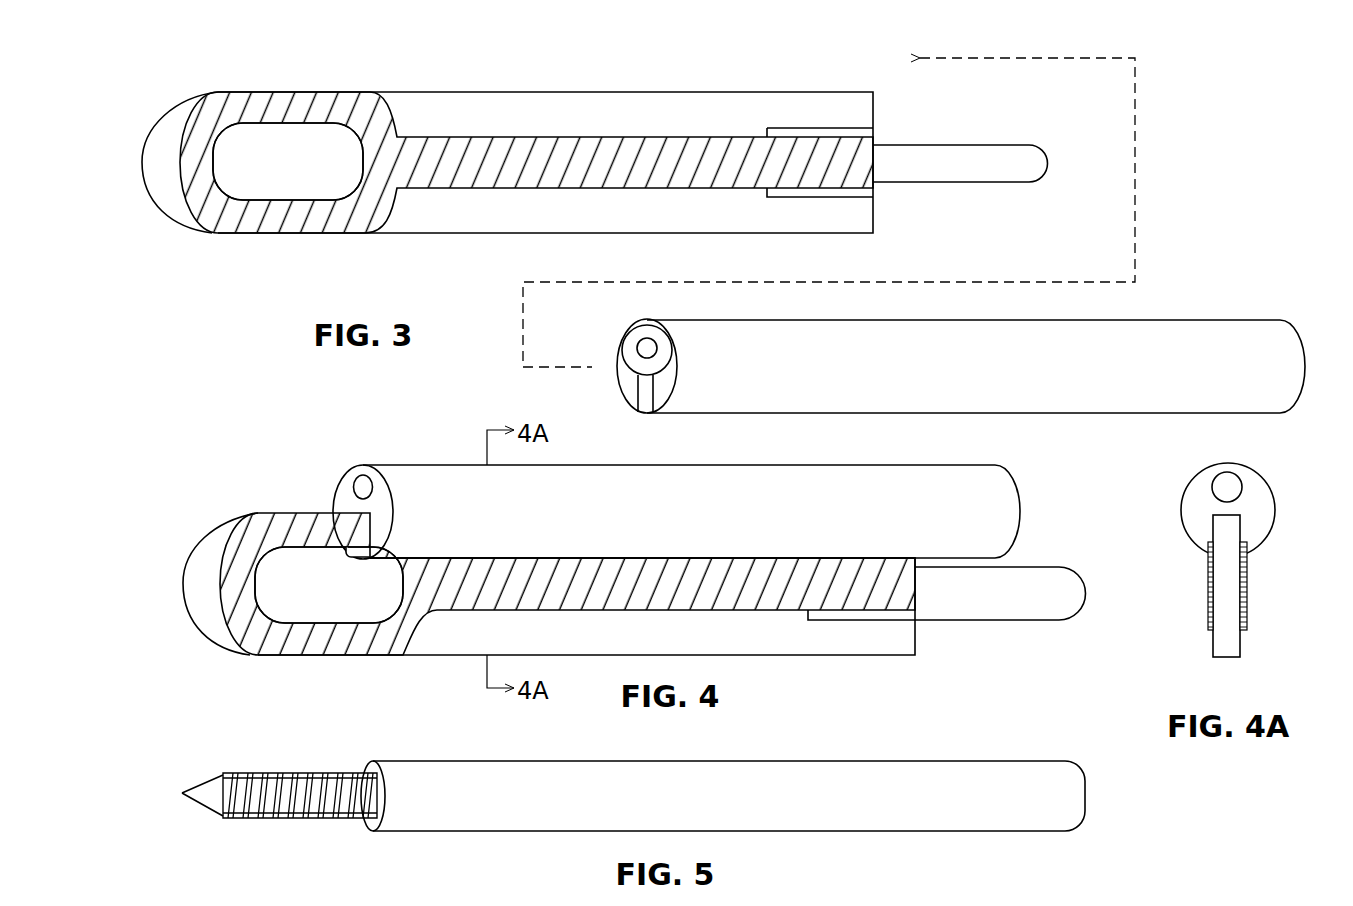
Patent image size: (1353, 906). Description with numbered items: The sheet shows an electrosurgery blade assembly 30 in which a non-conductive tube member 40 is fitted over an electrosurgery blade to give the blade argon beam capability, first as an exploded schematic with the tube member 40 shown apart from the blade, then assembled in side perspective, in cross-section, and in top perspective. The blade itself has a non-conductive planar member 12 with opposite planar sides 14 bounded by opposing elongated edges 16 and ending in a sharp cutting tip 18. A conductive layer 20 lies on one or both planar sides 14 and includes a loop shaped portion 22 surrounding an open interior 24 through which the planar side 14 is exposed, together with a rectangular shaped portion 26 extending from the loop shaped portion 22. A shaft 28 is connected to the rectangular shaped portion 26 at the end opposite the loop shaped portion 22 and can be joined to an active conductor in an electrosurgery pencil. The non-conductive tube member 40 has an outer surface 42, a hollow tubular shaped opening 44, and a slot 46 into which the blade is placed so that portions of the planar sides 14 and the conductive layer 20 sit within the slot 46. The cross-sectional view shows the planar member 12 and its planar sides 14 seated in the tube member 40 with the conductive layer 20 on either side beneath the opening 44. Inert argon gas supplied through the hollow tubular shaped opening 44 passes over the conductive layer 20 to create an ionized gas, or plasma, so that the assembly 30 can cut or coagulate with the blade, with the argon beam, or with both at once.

In FIG. 3, the non-conductive planar member 12 is at (433, 118).
In FIG. 4, the non-conductive planar member 12 is at (586, 606).
In FIG. 4A, the non-conductive planar member 12 is at (1228, 652).
In FIG. 3, the opposing planar sides 14 is at (574, 127).
In FIG. 4, the opposing planar sides 14 is at (295, 605).
In FIG. 4A, the opposing planar sides 14 is at (1210, 641).
In FIG. 3, the opposing elongated edges 16 is at (685, 89).
In FIG. 4, the opposing elongated edges 16 is at (870, 657).
In FIG. 3, the sharp cutting tip 18 is at (140, 161).
In FIG. 4, the sharp cutting tip 18 is at (181, 584).
In FIG. 5, the sharp cutting tip 18 is at (180, 793).
In FIG. 3, the conductive layer 20 is at (397, 197).
In FIG. 4, the conductive layer 20 is at (450, 603).
In FIG. 4A, the conductive layer 20 is at (1208, 566).
In FIG. 3, the loop shaped portion 22 is at (263, 208).
In FIG. 4, the loop shaped portion 22 is at (298, 632).
In FIG. 5, the loop shaped portion 22 is at (290, 774).
In FIG. 3, the open interior 24 is at (248, 148).
In FIG. 4, the open interior 24 is at (292, 565).
In FIG. 3, the rectangular shaped portion 26 is at (652, 178).
In FIG. 3, the shaft 28 is at (932, 160).
In FIG. 4, the shaft 28 is at (972, 605).
In FIG. 3, the electrosurgery blade assembly 30 is at (1153, 202).
In FIG. 3, the non-conductive tube member 40 is at (1175, 337).
In FIG. 4, the non-conductive tube member 40 is at (905, 485).
In FIG. 4A, the non-conductive tube member 40 is at (1258, 498).
In FIG. 5, the non-conductive tube member 40 is at (973, 780).
In FIG. 3, the outer surface 42 is at (1156, 383).
In FIG. 4, the outer surface 42 is at (634, 523).
In FIG. 5, the outer surface 42 is at (909, 814).
In FIG. 3, the hollow tubular shaped opening 44 is at (647, 340).
In FIG. 4, the hollow tubular shaped opening 44 is at (362, 478).
In FIG. 4A, the hollow tubular shaped opening 44 is at (1222, 487).
In FIG. 3, the slot 46 is at (645, 400).
In FIG. 4, the slot 46 is at (358, 552).